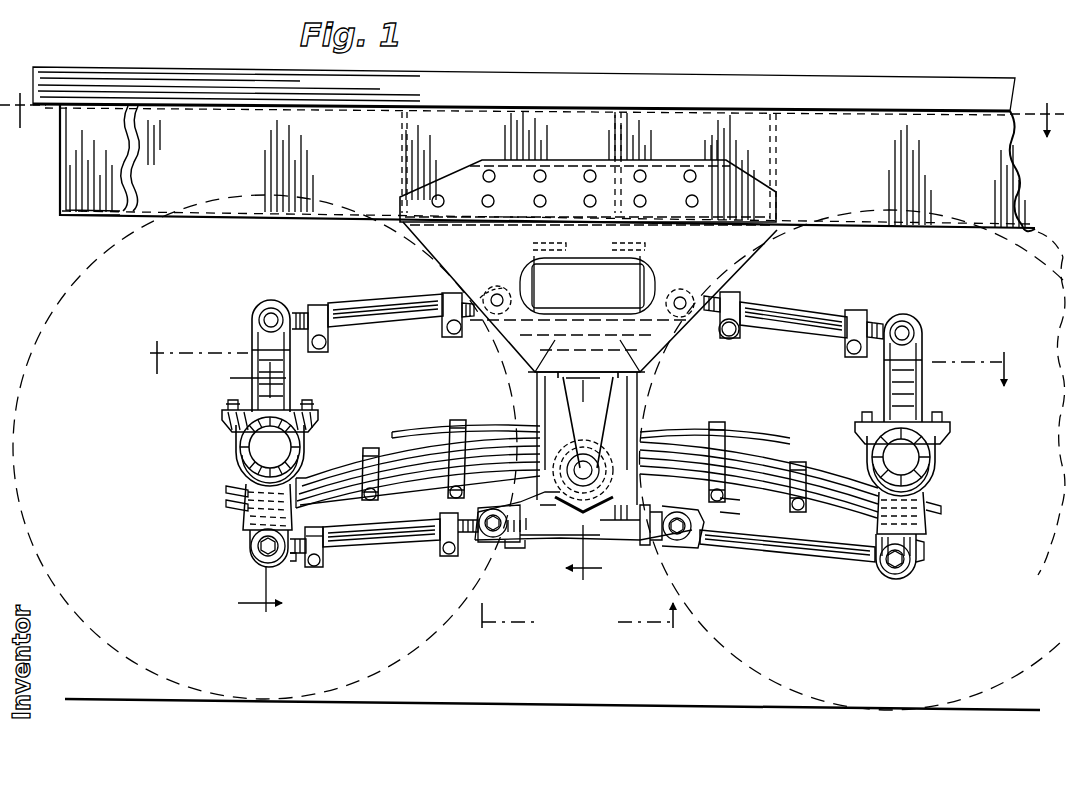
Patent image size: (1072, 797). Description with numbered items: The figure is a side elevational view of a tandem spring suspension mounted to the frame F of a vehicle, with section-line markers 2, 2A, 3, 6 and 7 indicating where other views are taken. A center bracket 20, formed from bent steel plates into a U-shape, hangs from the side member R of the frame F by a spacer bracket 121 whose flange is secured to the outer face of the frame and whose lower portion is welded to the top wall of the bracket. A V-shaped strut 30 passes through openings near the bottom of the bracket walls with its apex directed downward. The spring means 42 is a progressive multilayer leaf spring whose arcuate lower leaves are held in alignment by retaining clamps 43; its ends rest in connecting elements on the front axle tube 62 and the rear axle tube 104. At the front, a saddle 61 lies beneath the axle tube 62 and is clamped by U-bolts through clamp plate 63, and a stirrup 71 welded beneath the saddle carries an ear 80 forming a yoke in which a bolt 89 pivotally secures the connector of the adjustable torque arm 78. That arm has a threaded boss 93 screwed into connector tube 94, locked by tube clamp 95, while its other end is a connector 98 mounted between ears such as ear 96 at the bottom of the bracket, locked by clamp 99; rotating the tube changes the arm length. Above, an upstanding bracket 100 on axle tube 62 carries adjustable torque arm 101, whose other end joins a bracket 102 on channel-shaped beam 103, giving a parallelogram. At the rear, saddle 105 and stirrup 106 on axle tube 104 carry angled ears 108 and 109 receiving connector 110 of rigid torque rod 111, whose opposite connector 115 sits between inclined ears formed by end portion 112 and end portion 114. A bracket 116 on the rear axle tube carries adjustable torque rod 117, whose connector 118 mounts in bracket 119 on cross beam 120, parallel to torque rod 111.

The frame F is at (882, 128).
The side member R is at (100, 213).
The spacer bracket 121 is at (730, 188).
The center bracket 20 is at (640, 410).
The channel-shaped beam 103 is at (530, 248).
The cross beam 120 is at (660, 250).
The bracket 102 is at (440, 266).
The bracket 119 is at (700, 292).
The adjustable torque arm 101 is at (364, 298).
The adjustable torque rod 117 is at (806, 312).
The connector 118 is at (727, 340).
The upstanding bracket 100 is at (255, 346).
The bracket 116 is at (910, 380).
The clamp plate 63 is at (228, 417).
The axle tube 62 is at (246, 437).
The saddle 61 is at (236, 470).
The stirrup 71 is at (250, 506).
The ear 80 is at (258, 530).
The bolt 89 is at (266, 556).
The rear axle tube 104 is at (912, 452).
The saddle 105 is at (930, 470).
The stirrup 106 is at (925, 506).
The ear 108 is at (896, 577).
The connector 110 is at (882, 570).
The ear 109 is at (926, 566).
The adjustable torque arm 78 is at (370, 552).
The spring means 42 is at (742, 432).
The retaining clamp 43 is at (800, 472).
The connector tube 94 is at (390, 524).
The clamp 99 is at (446, 538).
The ear 96 is at (490, 542).
The connector 98 is at (472, 522).
The threaded boss 93 is at (296, 562).
The tube clamp 95 is at (330, 556).
The strut 30 is at (578, 512).
The end portion 112 is at (674, 542).
The connector 115 is at (702, 548).
The rigid torque rod 111 is at (790, 563).
The end portion 114 is at (708, 528).
The section line 2 is at (532, 109).
The section line 2A is at (579, 364).
The section line 3 is at (584, 466).
The section line 6 is at (578, 633).
The section line 7 is at (249, 494).